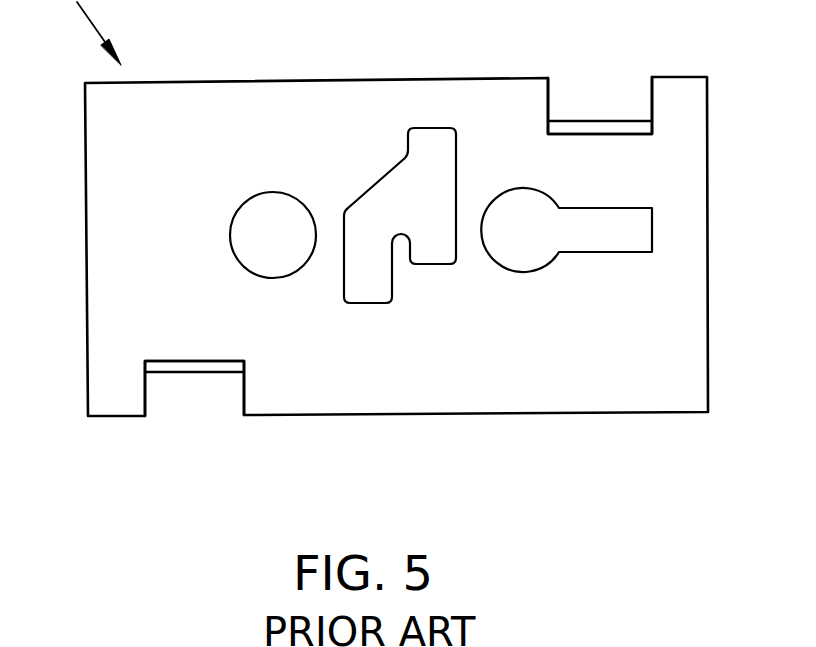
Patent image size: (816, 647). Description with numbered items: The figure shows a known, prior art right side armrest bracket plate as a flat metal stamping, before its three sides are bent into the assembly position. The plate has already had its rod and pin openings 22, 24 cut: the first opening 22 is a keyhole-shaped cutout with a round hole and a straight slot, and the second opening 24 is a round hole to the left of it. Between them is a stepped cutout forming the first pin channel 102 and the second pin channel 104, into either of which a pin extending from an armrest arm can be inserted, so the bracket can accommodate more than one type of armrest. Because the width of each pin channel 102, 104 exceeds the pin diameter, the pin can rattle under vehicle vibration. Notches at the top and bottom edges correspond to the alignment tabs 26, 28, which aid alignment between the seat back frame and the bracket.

The first opening 22 is at (595, 235).
The second opening 24 is at (273, 235).
The alignment tab 26 is at (598, 125).
The alignment tab 28 is at (197, 372).
The first pin channel 102 is at (357, 293).
The second pin channel 104 is at (436, 262).